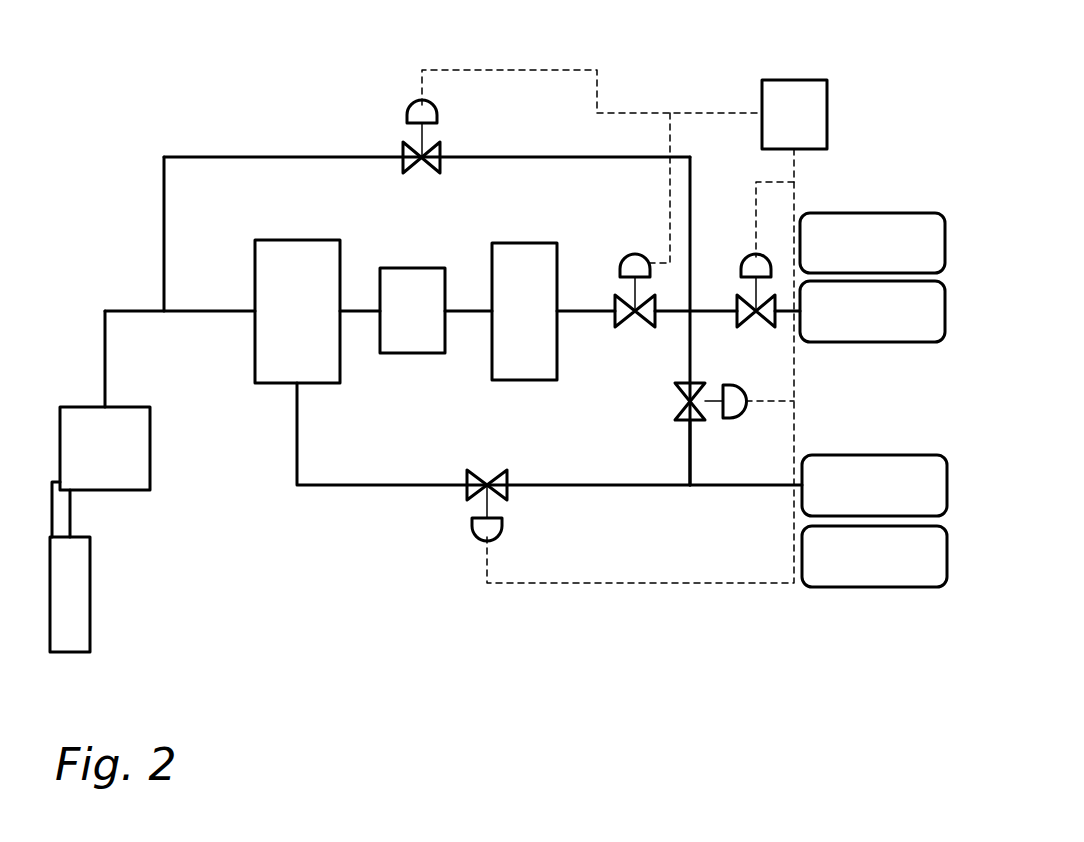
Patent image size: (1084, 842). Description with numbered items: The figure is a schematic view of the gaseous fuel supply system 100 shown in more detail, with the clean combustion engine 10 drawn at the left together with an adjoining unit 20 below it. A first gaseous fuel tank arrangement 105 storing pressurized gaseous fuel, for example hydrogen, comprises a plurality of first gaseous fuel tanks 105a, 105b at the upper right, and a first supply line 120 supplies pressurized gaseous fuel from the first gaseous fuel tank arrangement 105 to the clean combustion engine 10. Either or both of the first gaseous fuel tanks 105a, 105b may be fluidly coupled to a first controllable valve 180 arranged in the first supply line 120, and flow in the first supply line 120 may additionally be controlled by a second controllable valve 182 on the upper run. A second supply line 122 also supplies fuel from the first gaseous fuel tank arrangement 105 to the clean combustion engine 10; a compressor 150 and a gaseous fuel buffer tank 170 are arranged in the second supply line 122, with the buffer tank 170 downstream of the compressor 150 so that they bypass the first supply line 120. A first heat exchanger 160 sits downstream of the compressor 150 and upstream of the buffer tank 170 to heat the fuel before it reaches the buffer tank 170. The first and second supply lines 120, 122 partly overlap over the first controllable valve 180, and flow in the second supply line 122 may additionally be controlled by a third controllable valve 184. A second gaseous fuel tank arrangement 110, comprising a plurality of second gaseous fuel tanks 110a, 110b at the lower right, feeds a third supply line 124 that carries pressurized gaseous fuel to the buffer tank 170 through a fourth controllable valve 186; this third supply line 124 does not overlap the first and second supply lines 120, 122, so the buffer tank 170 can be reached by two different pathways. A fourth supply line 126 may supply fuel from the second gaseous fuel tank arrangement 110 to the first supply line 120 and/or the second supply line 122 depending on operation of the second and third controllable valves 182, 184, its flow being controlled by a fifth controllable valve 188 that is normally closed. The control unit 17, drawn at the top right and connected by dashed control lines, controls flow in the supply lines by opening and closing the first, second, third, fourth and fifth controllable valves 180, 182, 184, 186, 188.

The gaseous fuel supply system 100 is at (132, 127).
The clean combustion engine 10 is at (70, 407).
The tank 20 is at (90, 613).
The control unit 17 is at (762, 92).
The first gaseous fuel tank arrangement 105 is at (878, 238).
The first gaseous fuel tank 105a is at (905, 343).
The first gaseous fuel tank 105b is at (845, 213).
The second gaseous fuel tank arrangement 110 is at (840, 534).
The second gaseous fuel tank 110a is at (833, 455).
The second gaseous fuel tank 110b is at (805, 607).
The first supply line 120 is at (618, 157).
The second supply line 122 is at (579, 311).
The third supply line 124 is at (647, 487).
The fourth supply line 126 is at (690, 440).
The compressor 150 is at (499, 243).
The first heat exchanger 160 is at (413, 353).
The gaseous fuel buffer tank 170 is at (280, 240).
The first controllable valve 180 is at (772, 327).
The second controllable valve 182 is at (438, 172).
The third controllable valve 184 is at (630, 327).
The fourth controllable valve 186 is at (480, 540).
The fifth controllable valve 188 is at (684, 401).